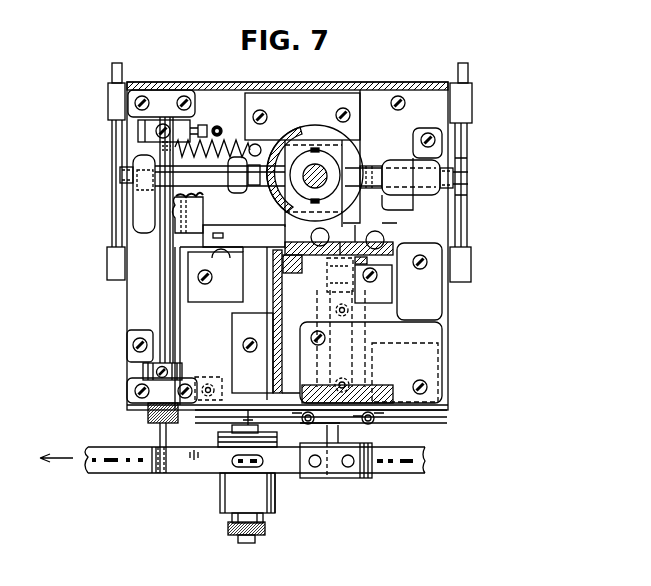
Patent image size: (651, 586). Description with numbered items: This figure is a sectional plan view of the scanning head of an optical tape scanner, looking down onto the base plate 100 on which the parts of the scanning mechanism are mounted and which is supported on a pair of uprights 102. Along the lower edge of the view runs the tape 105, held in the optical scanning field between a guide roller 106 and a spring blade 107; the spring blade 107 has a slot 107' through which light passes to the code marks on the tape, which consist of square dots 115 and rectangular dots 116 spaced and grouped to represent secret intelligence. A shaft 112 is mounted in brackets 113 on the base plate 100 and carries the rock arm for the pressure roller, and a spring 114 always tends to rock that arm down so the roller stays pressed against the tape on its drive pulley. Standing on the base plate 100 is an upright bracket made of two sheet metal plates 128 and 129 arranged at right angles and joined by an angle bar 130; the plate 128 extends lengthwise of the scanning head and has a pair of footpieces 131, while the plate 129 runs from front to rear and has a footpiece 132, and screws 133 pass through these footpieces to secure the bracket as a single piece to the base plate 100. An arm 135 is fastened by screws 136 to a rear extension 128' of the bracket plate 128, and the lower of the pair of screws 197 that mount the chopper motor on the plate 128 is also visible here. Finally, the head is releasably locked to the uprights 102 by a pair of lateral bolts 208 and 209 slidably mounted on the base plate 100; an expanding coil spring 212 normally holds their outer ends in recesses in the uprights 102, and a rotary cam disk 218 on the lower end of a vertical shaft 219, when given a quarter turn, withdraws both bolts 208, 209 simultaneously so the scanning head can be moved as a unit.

The base plate 100 is at (438, 218).
The uprights 102 is at (115, 140).
The tape 105 is at (120, 450).
The guide roller 106 is at (227, 497).
The spring blade 107 is at (272, 465).
The slot 107' is at (278, 481).
The shaft 112 is at (157, 310).
The brackets 113 is at (157, 100).
The spring 114 is at (243, 141).
The square dots 115 is at (128, 465).
The rectangular dots 116 is at (105, 465).
The bracket plate 128 is at (371, 314).
The rear extension 128' is at (320, 240).
The bracket plate 129 is at (279, 324).
The angle bar 130 is at (290, 263).
The footpieces 131 is at (228, 296).
The footpiece 132 is at (265, 379).
The screws 133 is at (377, 279).
The arm 135 is at (193, 215).
The screws 136 is at (223, 260).
The screws 197 is at (373, 236).
The lateral bolt 208 is at (455, 179).
The lateral bolt 209 is at (123, 175).
The expanding coil spring 212 is at (331, 167).
The rotary cam disk 218 is at (338, 140).
The vertical shaft 219 is at (326, 170).